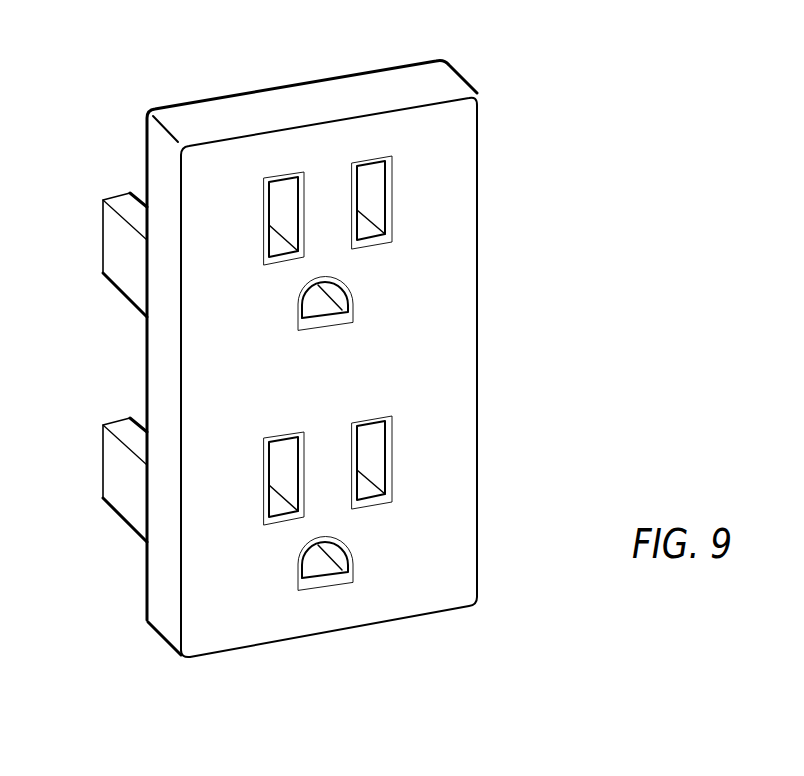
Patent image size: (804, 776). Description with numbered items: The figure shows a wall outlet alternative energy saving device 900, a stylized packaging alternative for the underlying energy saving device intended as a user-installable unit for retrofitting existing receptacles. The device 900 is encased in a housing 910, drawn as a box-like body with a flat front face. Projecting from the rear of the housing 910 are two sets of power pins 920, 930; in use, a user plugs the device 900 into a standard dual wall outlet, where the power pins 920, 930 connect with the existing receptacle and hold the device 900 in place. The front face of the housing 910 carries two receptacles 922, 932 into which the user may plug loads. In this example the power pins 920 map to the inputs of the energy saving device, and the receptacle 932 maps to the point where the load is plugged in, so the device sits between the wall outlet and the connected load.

The wall outlet alternative energy saving device 900 is at (690, 70).
The housing 910 is at (160, 632).
The power pins 920 is at (100, 401).
The power pins 930 is at (100, 176).
The receptacle 922 is at (416, 483).
The receptacle 932 is at (416, 225).